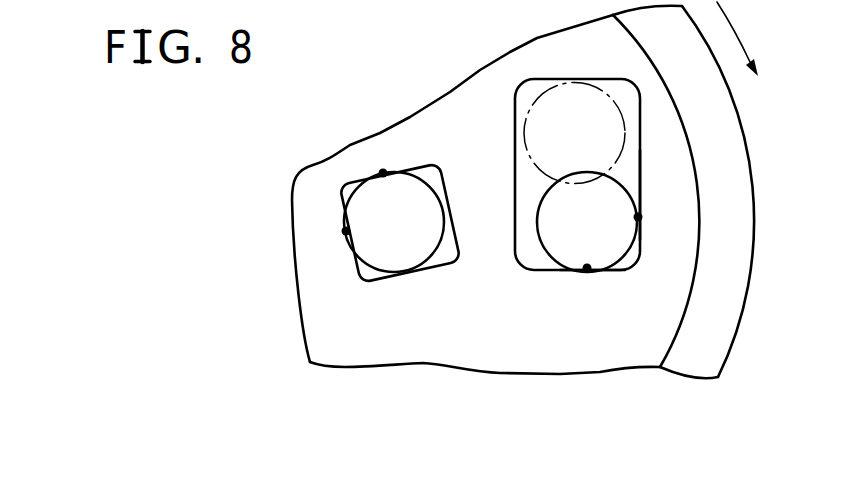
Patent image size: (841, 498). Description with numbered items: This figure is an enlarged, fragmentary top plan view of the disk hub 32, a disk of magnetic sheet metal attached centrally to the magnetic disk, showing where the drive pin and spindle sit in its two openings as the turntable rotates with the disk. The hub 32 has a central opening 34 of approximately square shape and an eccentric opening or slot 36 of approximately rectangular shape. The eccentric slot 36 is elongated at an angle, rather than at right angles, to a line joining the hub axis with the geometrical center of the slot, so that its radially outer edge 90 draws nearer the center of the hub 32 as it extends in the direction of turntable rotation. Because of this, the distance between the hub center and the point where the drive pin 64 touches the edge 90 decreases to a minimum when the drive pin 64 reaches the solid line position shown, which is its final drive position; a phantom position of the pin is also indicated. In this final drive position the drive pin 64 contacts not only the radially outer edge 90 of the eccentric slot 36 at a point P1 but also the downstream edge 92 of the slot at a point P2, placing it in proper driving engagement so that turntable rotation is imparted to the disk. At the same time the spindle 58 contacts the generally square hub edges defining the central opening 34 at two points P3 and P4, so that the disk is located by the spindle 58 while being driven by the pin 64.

The hub 32 is at (448, 105).
The central opening 34 is at (388, 280).
The spindle 58 is at (367, 242).
The eccentric opening 36 is at (532, 262).
The drive pin 64 is at (627, 184).
The radially outer edge 90 is at (640, 196).
The downstream edge 92 is at (629, 264).
The point of contact P1 is at (638, 217).
The point of contact P2 is at (587, 270).
The point of contact P3 is at (346, 231).
The point of contact P4 is at (383, 173).